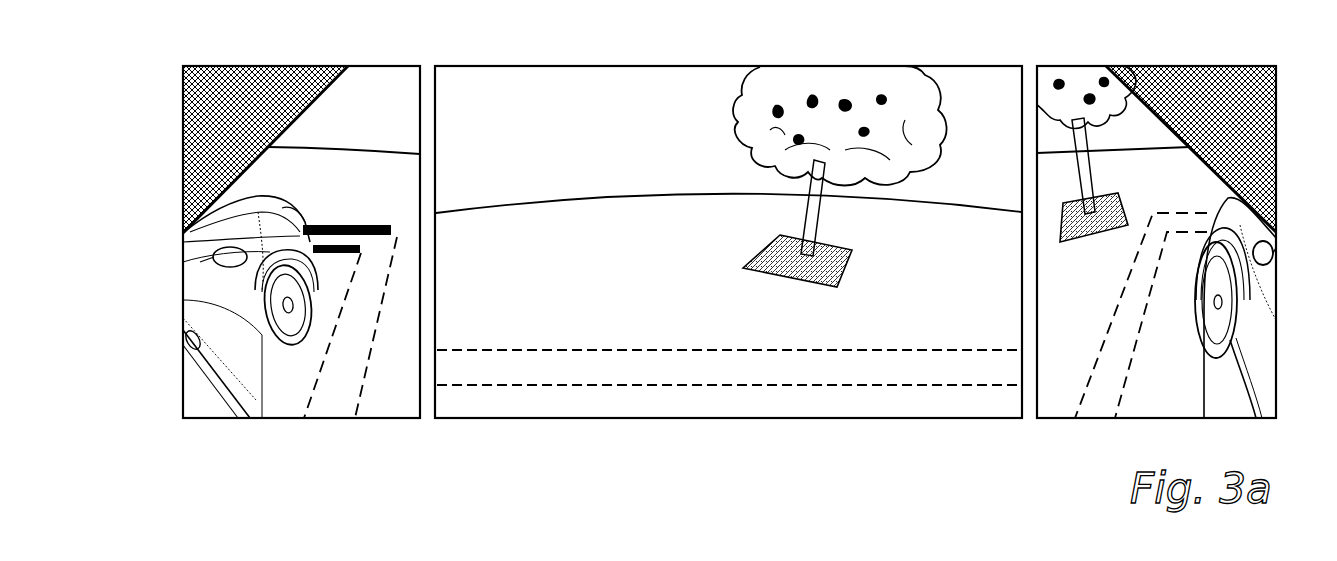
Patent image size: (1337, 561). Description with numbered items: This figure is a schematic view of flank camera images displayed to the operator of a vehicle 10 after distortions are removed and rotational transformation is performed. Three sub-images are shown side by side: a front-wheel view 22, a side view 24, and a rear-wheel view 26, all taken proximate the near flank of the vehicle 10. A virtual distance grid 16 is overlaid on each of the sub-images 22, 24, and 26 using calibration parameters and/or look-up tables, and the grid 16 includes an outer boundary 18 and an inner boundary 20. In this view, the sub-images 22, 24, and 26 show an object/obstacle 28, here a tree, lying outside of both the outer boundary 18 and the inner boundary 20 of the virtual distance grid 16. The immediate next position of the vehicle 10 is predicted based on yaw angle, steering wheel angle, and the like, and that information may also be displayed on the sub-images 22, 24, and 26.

The vehicle 10 is at (1253, 313).
The virtual distance grid 16 is at (322, 279).
The outer boundary 18 is at (359, 379).
The inner boundary 20 is at (314, 362).
The front-wheel view 22 is at (363, 209).
The side view 24 is at (719, 204).
The rear-wheel view 26 is at (1189, 199).
The object/obstacle 28 is at (849, 228).